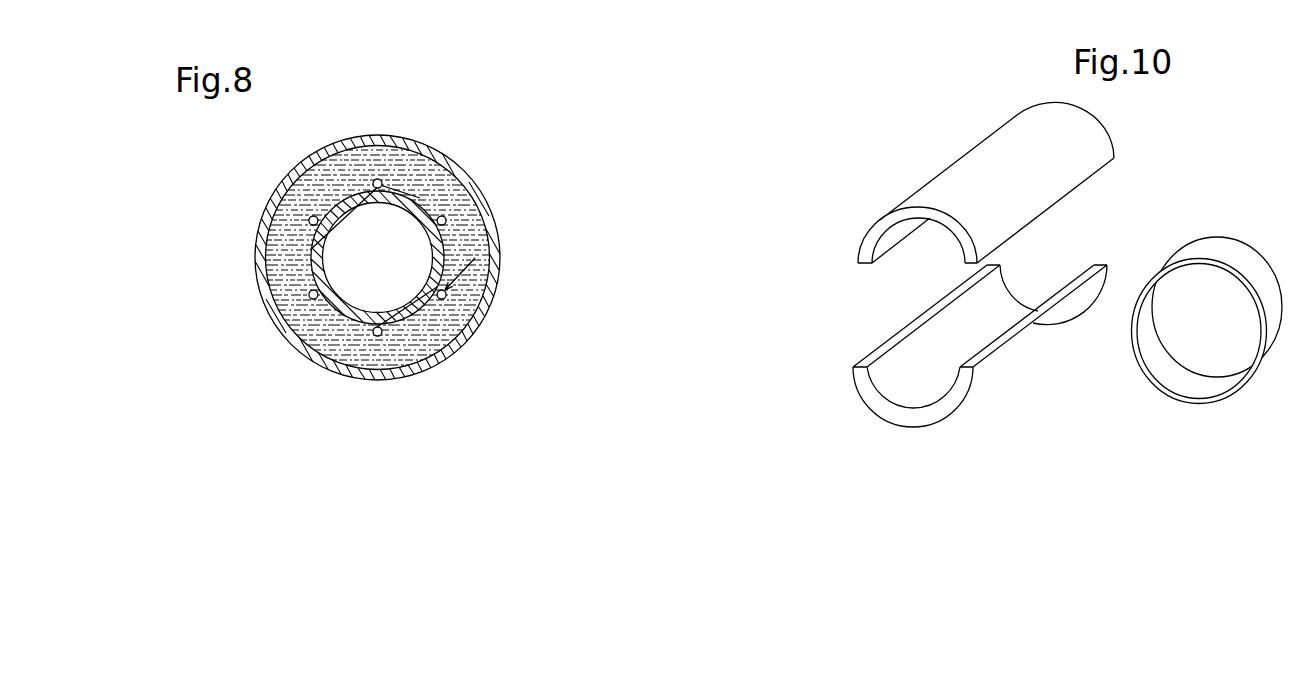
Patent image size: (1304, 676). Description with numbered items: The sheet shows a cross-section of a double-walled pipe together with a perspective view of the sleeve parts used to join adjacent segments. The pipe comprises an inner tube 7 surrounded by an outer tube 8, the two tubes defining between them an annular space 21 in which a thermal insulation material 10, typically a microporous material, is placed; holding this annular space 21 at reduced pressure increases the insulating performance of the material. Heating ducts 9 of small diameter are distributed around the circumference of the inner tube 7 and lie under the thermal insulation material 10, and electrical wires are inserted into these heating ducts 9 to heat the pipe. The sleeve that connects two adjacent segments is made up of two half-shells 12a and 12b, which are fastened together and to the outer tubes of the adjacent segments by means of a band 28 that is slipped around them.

In FIG. 8, the inner tube 7 is at (450, 176).
In FIG. 8, the outer tube 8 is at (483, 200).
In FIG. 8, the heating ducts 9 is at (502, 232).
In FIG. 8, the thermal insulation material 10 is at (493, 253).
In FIG. 8, the annular space 21 is at (470, 323).
In FIG. 10, the half-shell 12a is at (977, 125).
In FIG. 10, the half-shell 12b is at (869, 334).
In FIG. 10, the band 28 is at (1238, 210).